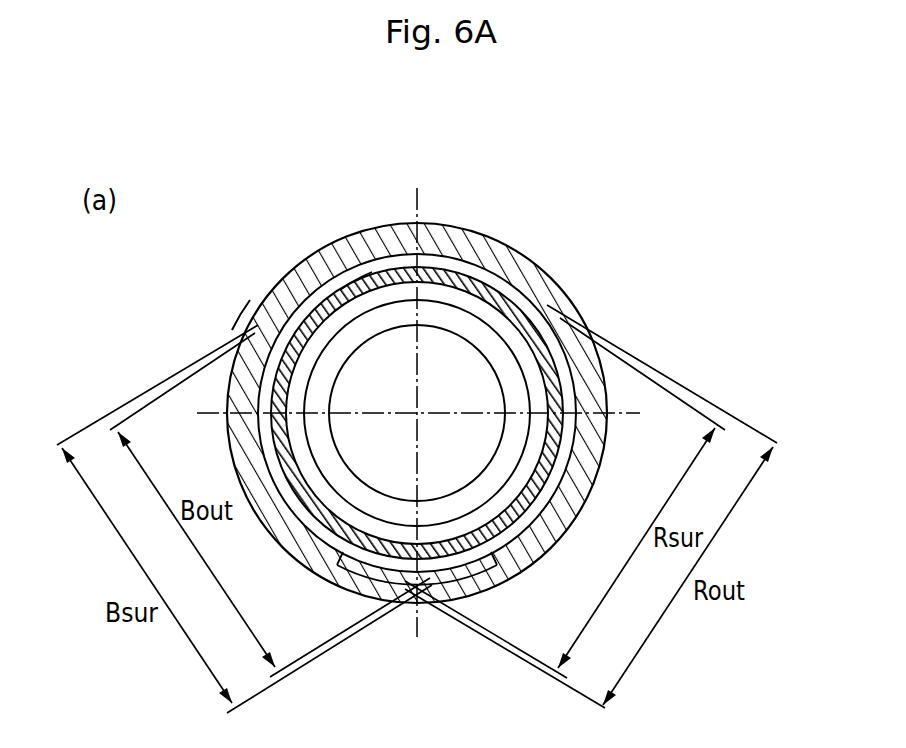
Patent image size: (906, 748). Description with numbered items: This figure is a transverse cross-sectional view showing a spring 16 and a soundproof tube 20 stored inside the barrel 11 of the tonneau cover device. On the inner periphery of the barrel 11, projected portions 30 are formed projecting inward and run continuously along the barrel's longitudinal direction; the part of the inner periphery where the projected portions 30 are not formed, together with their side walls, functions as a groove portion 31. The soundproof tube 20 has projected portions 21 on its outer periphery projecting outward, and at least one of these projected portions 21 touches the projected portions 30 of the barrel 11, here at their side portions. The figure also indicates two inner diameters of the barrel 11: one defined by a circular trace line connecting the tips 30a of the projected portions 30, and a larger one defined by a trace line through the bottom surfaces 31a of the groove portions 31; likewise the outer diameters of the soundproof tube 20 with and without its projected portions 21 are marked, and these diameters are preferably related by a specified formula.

The barrel 11 is at (380, 226).
The spring 16 is at (447, 307).
The soundproof tube 20 is at (552, 452).
The projected portions 21 is at (493, 290).
The projected portions 30 is at (353, 268).
The tips 30a is at (357, 274).
The groove portion 31 is at (438, 254).
The bottom surfaces 31a is at (255, 318).